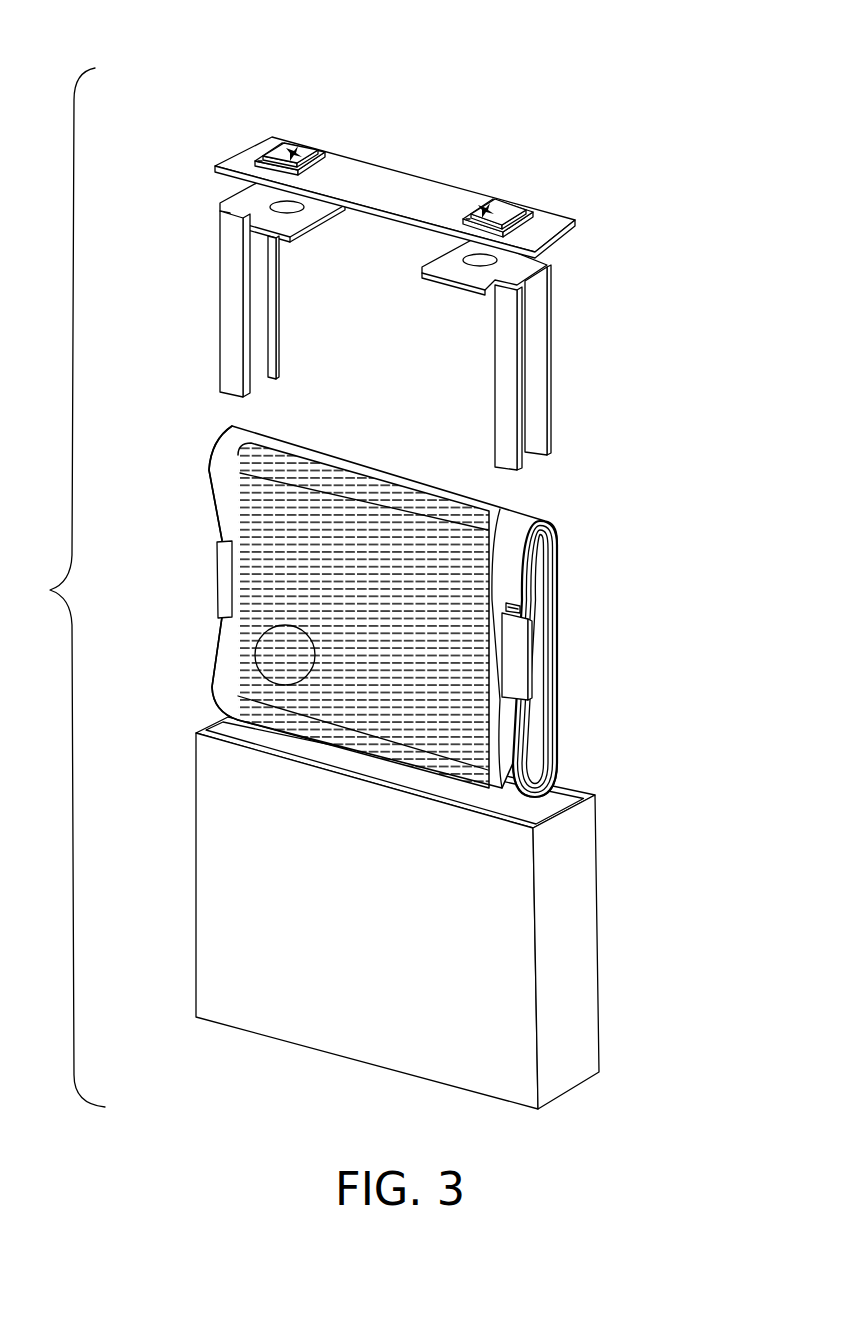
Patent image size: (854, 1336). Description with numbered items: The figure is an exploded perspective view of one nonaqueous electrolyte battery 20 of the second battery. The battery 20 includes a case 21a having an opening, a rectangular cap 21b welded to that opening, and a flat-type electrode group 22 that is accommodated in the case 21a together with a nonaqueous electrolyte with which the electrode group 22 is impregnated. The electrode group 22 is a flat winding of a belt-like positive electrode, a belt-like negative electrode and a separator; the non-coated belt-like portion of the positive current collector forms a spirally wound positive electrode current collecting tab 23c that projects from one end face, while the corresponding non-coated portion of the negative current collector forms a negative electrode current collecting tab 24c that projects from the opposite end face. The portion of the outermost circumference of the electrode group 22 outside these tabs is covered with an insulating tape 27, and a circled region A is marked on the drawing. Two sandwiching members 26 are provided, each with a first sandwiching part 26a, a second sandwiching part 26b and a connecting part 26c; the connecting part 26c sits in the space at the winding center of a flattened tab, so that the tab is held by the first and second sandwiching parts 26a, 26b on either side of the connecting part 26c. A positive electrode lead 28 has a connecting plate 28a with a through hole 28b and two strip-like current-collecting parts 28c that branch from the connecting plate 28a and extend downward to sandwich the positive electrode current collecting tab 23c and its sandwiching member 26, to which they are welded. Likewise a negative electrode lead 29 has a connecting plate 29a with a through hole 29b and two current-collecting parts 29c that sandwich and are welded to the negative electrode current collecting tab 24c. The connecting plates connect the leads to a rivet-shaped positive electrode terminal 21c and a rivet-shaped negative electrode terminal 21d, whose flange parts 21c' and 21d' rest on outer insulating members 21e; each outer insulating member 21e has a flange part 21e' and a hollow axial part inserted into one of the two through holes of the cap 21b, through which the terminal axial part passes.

The nonaqueous electrolyte battery 20 is at (676, 527).
The case 21a is at (573, 943).
The cap 21b is at (550, 220).
The positive electrode terminal 21c is at (479, 178).
The flange part 21c' is at (507, 171).
The negative electrode terminal 21d is at (306, 114).
The flange part 21d' is at (277, 116).
The outer insulating member 21e is at (439, 204).
The flange part 21e' is at (422, 155).
The flat-type electrode group 22 is at (585, 758).
The positive electrode current collecting tab 23c is at (552, 583).
The negative electrode current collecting tab 24c is at (220, 480).
The sandwiching member 26 is at (222, 578).
The first sandwiching part 26a is at (552, 660).
The second sandwiching part 26b is at (532, 680).
The connecting part 26c is at (528, 596).
The insulating tape 27 is at (388, 485).
The positive electrode lead 28 is at (582, 402).
The connecting plate 28a is at (430, 270).
The through hole 28b is at (478, 264).
The current-collecting parts 28c is at (552, 332).
The negative electrode lead 29 is at (295, 352).
The connecting plate 29a is at (313, 205).
The through hole 29b is at (287, 209).
The current-collecting parts 29c is at (232, 311).
The region A is at (258, 660).